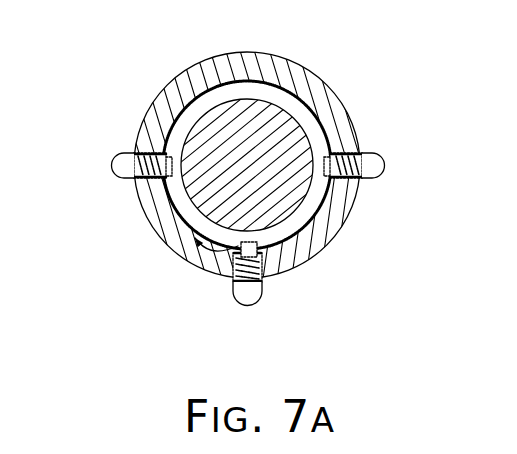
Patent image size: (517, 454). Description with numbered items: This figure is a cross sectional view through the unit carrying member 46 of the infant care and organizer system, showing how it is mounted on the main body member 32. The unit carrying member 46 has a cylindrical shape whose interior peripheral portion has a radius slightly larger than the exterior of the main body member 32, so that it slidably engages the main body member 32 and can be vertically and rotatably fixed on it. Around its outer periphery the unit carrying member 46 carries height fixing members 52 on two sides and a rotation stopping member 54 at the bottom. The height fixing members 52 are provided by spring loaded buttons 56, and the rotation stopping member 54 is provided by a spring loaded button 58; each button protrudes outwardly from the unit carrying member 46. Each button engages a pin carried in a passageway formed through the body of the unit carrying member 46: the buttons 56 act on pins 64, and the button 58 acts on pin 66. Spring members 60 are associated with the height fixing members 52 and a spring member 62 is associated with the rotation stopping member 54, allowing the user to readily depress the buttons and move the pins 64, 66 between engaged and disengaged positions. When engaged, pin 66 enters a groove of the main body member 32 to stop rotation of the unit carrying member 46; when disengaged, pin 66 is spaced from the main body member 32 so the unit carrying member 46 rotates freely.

The main body member 32 is at (292, 209).
The unit carrying member 46 is at (334, 71).
The height fixing member 52 is at (102, 128).
The rotation stopping member 54 is at (221, 297).
The spring loaded button 56 is at (134, 154).
The spring loaded button 58 is at (238, 305).
The spring member 60 is at (152, 150).
The spring member 62 is at (233, 265).
The pin 64 is at (162, 146).
The pin 66 is at (238, 252).